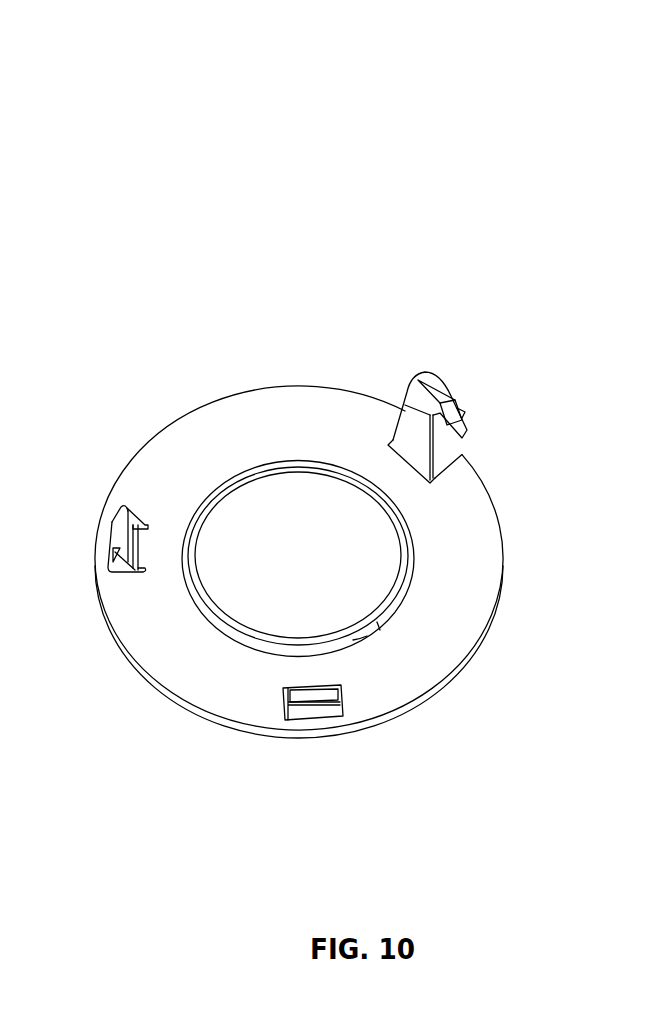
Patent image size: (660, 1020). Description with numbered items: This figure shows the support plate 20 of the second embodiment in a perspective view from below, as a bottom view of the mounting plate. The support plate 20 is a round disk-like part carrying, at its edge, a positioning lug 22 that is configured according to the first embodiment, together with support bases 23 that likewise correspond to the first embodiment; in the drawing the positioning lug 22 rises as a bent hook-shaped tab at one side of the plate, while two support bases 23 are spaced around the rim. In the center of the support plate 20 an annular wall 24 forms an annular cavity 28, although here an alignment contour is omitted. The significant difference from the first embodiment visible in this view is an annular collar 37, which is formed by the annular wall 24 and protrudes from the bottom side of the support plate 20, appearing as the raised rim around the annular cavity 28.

The support plate 20 is at (472, 240).
The positioning lug 22 is at (480, 422).
The support bases 23 is at (138, 572).
The annular wall 24 is at (463, 568).
The annular cavity 28 is at (305, 567).
The annular collar 37 is at (385, 618).